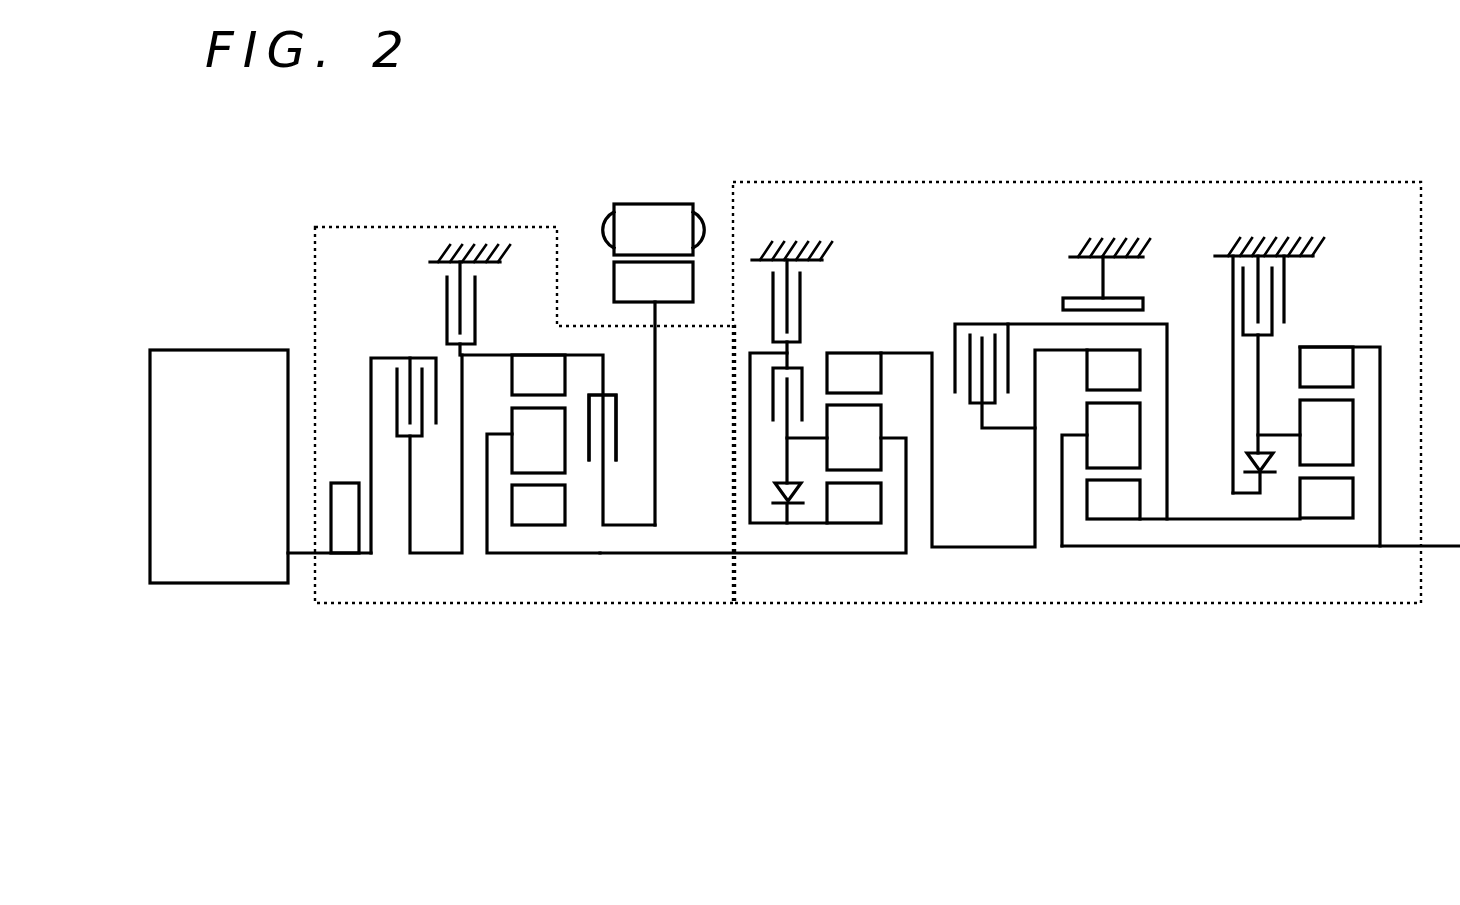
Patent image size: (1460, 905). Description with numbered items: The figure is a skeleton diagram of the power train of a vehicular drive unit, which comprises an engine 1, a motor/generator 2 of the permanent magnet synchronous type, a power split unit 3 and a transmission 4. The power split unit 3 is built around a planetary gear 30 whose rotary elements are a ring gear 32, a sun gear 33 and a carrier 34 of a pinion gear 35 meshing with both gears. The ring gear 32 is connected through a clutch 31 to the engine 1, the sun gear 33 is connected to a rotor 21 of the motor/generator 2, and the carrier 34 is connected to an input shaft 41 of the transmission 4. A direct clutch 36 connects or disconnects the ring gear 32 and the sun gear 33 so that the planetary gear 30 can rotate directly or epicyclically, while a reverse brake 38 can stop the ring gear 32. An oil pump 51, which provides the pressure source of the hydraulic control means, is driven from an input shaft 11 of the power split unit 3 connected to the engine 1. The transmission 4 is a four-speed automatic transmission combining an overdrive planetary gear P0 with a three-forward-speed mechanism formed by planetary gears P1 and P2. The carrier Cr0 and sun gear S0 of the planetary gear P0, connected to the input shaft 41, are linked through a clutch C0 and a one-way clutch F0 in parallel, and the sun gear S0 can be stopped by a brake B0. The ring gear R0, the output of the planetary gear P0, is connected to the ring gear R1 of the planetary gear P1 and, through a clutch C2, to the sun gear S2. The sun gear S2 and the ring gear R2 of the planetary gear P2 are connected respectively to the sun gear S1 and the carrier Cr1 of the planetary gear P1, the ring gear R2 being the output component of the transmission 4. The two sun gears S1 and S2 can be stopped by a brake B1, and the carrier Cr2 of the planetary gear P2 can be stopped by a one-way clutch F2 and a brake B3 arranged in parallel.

The engine 1 is at (234, 350).
The motor/generator 2 is at (642, 330).
The power split unit 3 is at (396, 227).
The transmission 4 is at (1240, 182).
The input shaft of the power split unit 11 is at (322, 556).
The rotor of the motor/generator 21 is at (614, 290).
The planetary gear 30 is at (558, 470).
The clutch 31 is at (398, 386).
The ring gear 32 is at (545, 355).
The sun gear 33 is at (540, 527).
The carrier 34 is at (485, 468).
The pinion gear 35 is at (566, 440).
The direct clutch 36 is at (617, 445).
The reverse brake 38 is at (448, 314).
The input shaft of the transmission 41 is at (640, 555).
The oil pump 51 is at (345, 478).
The brake B0 is at (803, 298).
The brake B1 is at (1128, 298).
The brake B3 is at (1285, 292).
The clutch C0 is at (772, 388).
The clutch C2 is at (970, 324).
The carrier of planetary gear P0 Cr0 is at (812, 400).
The carrier of planetary gear P1 Cr1 is at (1062, 462).
The carrier of planetary gear P2 Cr2 is at (1277, 434).
The one-way clutch F0 is at (772, 494).
The one-way clutch F2 is at (1246, 452).
The planetary gear P0 is at (933, 469).
The planetary gear P1 is at (1133, 482).
The planetary gear P2 is at (1344, 472).
The ring gear of planetary gear P0 R0 is at (866, 353).
The ring gear of planetary gear P1 R1 is at (1143, 364).
The ring gear of planetary gear P2 R2 is at (1340, 348).
The sun gear of planetary gear P0 S0 is at (838, 526).
The sun gear of planetary gear P1 S1 is at (1143, 492).
The sun gear of planetary gear P2 S2 is at (1355, 494).